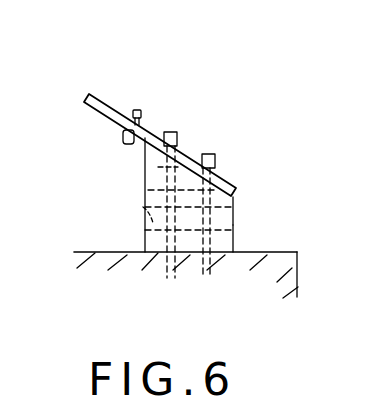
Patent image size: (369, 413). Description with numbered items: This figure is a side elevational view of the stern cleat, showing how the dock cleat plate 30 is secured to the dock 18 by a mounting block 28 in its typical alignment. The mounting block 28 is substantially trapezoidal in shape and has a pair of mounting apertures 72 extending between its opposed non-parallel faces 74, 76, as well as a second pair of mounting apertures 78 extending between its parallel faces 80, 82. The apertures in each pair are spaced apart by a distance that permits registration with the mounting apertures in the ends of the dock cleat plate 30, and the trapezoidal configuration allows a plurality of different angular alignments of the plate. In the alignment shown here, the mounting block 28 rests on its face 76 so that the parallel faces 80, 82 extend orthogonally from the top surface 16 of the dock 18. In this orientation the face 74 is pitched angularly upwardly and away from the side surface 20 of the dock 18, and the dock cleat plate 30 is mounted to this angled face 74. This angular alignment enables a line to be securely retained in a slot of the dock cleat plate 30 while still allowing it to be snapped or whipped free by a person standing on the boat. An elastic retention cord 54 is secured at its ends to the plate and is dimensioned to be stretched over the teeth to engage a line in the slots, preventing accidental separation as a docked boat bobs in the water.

The top surface 16 is at (243, 252).
The dock 18 is at (298, 252).
The side surface 20 is at (297, 283).
The mounting block 28 is at (237, 199).
The dock cleat plate 30 is at (95, 95).
The elastic retention cord 54 is at (132, 137).
The mounting apertures 72 is at (142, 187).
The non-parallel face 74 is at (153, 146).
The non-parallel face 76 is at (157, 252).
The mounting apertures 78 is at (138, 240).
The parallel face 80 is at (233, 252).
The parallel face 82 is at (140, 163).